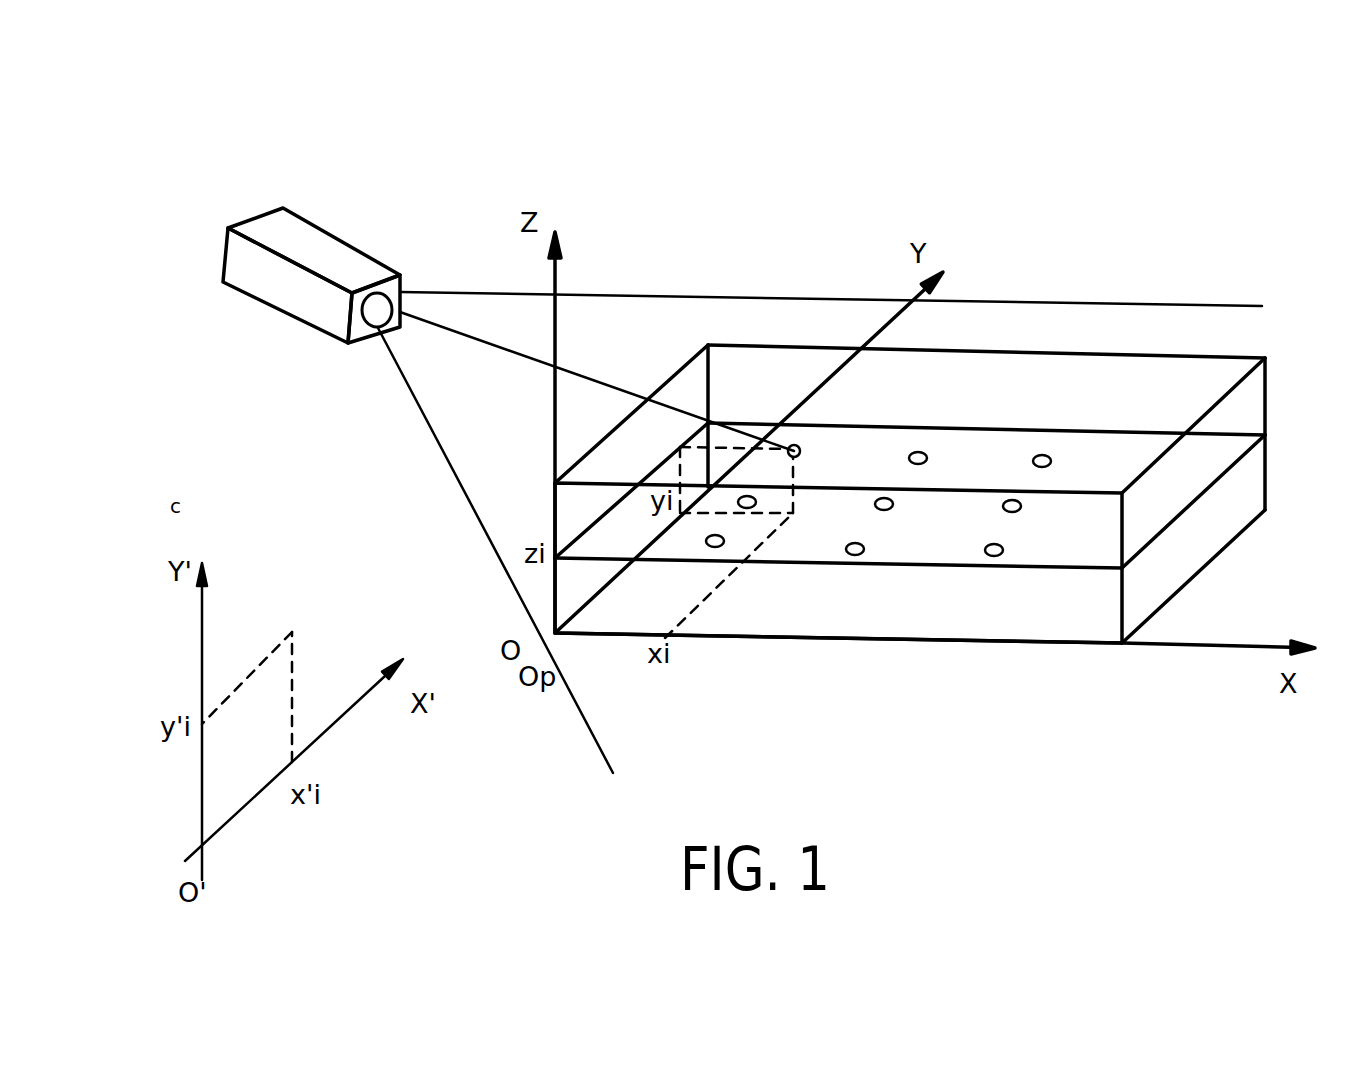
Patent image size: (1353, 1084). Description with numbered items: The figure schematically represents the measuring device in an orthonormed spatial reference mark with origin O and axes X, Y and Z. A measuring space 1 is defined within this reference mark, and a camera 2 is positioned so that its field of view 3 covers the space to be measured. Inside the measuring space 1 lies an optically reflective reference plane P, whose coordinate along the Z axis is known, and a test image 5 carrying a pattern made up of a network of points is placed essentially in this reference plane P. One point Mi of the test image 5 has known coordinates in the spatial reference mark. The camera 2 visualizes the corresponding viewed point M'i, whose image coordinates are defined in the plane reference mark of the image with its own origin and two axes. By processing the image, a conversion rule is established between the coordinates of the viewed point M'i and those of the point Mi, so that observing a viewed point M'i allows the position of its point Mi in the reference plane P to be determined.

The measuring space 1 is at (1065, 621).
The camera 2 is at (295, 288).
The field of view 3 is at (705, 288).
The test image 5 is at (896, 547).
The reference plane P is at (932, 576).
The point Mi is at (800, 447).
The viewed point M'i is at (207, 537).